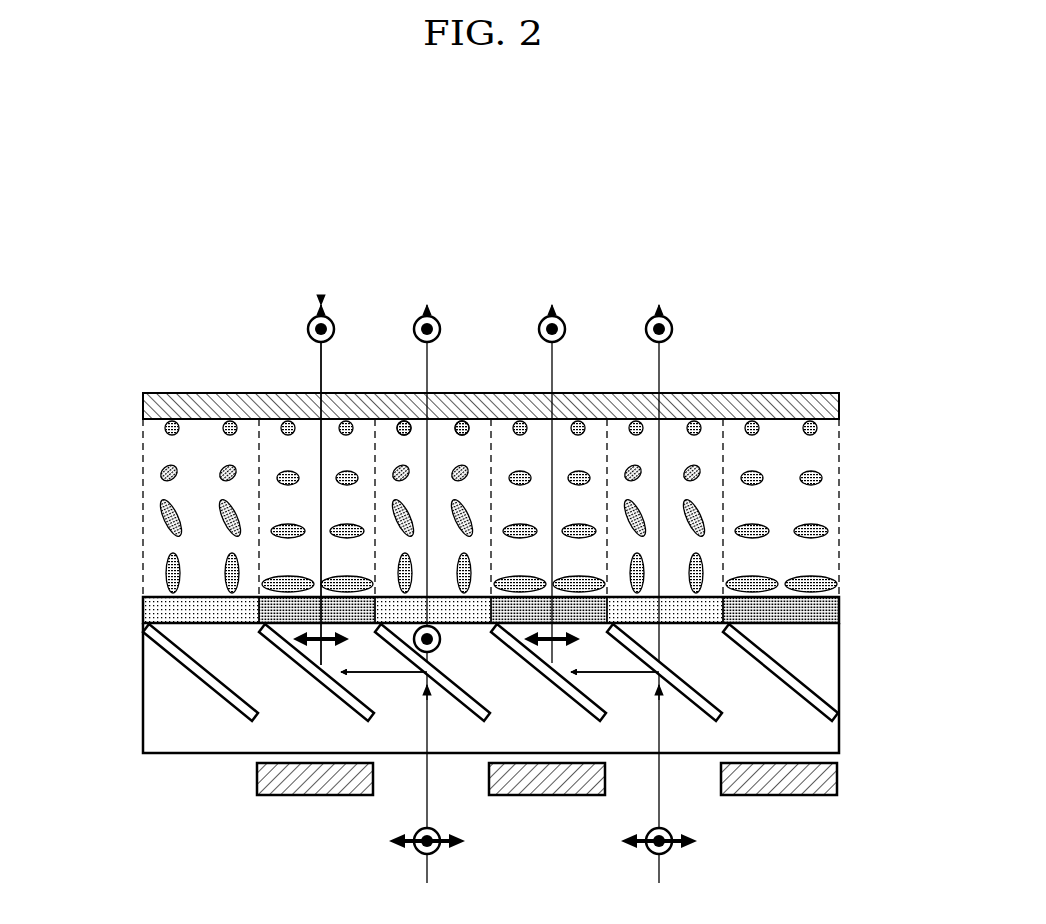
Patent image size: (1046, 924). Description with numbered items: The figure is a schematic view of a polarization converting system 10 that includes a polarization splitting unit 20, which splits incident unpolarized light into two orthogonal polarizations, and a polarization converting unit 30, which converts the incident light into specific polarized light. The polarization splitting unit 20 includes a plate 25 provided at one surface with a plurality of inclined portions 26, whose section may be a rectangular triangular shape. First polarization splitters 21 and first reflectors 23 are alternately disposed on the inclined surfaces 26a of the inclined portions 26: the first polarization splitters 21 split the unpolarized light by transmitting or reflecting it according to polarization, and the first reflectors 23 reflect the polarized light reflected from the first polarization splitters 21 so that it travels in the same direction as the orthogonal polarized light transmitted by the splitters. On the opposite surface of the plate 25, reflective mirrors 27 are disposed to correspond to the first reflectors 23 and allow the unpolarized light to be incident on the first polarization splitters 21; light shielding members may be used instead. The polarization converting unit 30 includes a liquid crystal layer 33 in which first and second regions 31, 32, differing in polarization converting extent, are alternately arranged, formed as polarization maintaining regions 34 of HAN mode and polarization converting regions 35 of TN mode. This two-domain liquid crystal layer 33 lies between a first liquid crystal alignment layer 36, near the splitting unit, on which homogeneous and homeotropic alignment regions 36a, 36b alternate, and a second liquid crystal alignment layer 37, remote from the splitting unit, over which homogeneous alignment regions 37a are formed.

The polarization converting system 10 is at (166, 380).
The polarization splitting unit 20 is at (855, 625).
The first polarization splitter 21 is at (456, 679).
The first reflector 23 is at (343, 679).
The plate 25 is at (140, 748).
The inclined portion 26 is at (157, 655).
The inclined surface 26a is at (185, 667).
The reflective mirror 27 is at (285, 796).
The polarization converting unit 30 is at (855, 392).
The first region 31 is at (375, 388).
The second region 32 is at (375, 388).
The liquid crystal layer 33 is at (152, 538).
The polarization maintaining region 34 is at (463, 447).
The polarization converting region 35 is at (357, 442).
The first liquid crystal alignment layer 36 is at (140, 608).
The homogeneous alignment region 36a is at (348, 598).
The homeotropic alignment region 36b is at (508, 598).
The second liquid crystal alignment layer 37 is at (140, 405).
The homogeneous alignment region 37a is at (730, 393).